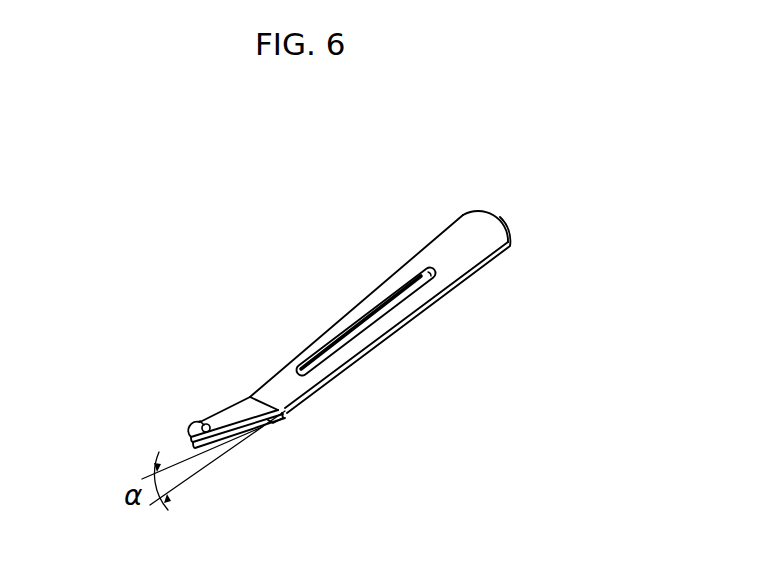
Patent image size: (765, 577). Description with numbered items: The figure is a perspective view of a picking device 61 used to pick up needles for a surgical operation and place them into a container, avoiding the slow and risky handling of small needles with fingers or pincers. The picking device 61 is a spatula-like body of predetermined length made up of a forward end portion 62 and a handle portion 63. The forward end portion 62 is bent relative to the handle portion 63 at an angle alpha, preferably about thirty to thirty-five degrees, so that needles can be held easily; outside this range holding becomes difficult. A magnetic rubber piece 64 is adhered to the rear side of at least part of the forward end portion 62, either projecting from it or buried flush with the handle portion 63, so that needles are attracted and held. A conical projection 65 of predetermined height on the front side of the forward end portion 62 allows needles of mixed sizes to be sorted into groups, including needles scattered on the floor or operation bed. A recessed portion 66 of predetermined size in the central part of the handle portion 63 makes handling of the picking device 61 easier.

The picking device 61 is at (476, 294).
The forward end portion 62 is at (217, 418).
The handle portion 63 is at (381, 329).
The magnetic rubber piece 64 is at (246, 432).
The conical projection 65 is at (200, 425).
The recessed portion 66 is at (388, 300).